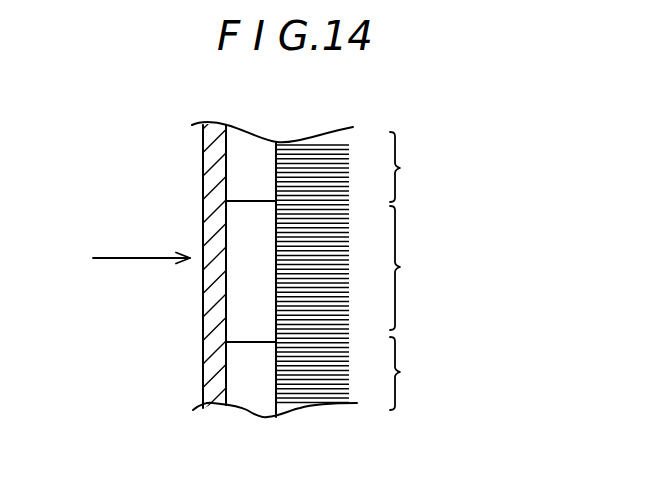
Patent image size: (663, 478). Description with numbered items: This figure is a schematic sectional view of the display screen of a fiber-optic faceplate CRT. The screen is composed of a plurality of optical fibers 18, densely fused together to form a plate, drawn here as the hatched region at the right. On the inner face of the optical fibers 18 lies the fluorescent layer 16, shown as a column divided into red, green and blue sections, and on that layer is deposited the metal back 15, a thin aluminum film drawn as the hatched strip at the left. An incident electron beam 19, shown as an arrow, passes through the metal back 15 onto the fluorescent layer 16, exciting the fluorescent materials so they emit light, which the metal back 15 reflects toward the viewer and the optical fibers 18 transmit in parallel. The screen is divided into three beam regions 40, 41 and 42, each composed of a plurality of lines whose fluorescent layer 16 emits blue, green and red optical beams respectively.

The metal back 15 is at (210, 343).
The fluorescent layer 16 is at (247, 400).
The optical fibers 18 is at (347, 385).
The incident electron beam 19 is at (137, 258).
The beam region 40 is at (401, 371).
The beam region 41 is at (401, 267).
The beam region 42 is at (401, 167).